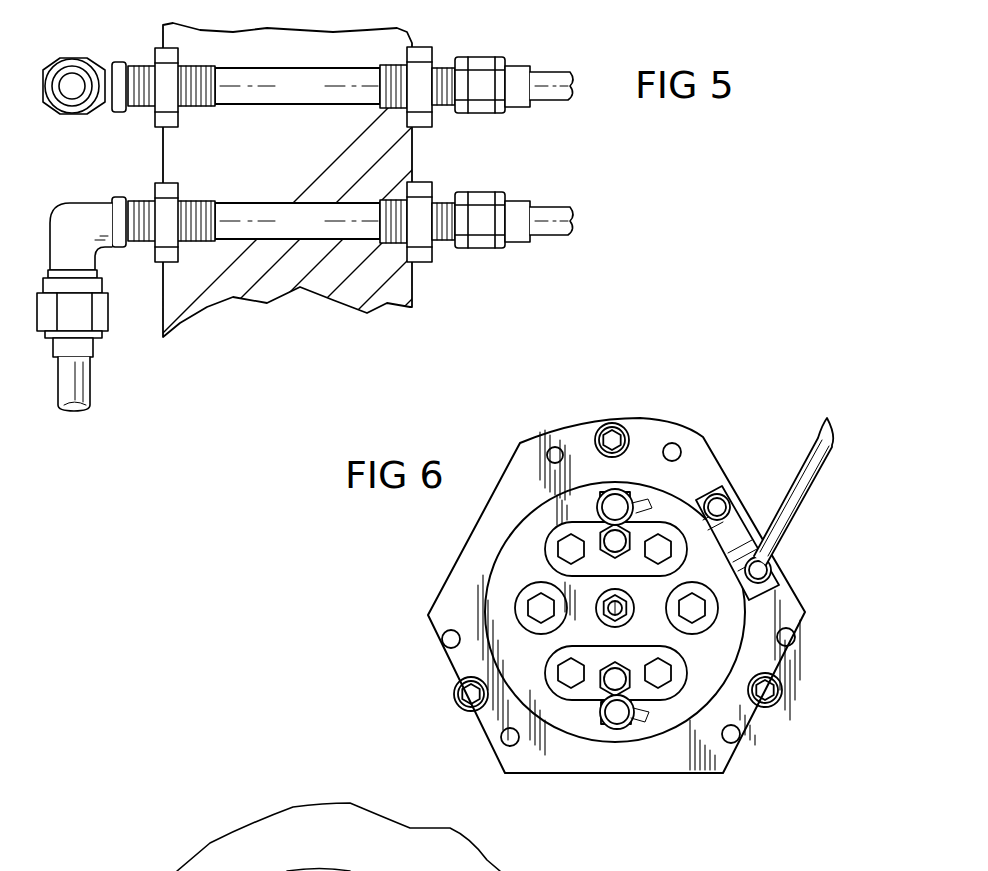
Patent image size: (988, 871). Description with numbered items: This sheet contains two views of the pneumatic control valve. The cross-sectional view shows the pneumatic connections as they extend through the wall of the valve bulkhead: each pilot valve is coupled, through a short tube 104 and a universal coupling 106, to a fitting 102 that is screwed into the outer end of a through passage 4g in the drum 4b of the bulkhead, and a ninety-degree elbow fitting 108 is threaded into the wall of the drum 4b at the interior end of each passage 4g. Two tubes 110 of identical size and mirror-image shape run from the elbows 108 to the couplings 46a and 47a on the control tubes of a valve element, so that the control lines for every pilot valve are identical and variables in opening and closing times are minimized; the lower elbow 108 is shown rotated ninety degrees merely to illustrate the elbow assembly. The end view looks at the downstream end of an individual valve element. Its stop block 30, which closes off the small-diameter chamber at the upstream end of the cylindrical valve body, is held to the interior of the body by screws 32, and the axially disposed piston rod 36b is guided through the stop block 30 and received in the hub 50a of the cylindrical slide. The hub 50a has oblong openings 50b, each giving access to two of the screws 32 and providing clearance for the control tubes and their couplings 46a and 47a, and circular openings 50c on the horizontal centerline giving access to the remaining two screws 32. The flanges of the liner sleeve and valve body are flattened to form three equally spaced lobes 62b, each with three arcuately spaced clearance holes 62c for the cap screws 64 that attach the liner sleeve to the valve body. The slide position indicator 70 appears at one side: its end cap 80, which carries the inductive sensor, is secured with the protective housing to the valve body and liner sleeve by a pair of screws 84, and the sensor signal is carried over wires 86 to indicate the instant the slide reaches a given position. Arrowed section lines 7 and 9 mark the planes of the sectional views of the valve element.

In FIG. 5, the drum 4b is at (395, 149).
In FIG. 5, the through passage 4g is at (312, 100).
In FIG. 5, the fitting 102 is at (433, 53).
In FIG. 5, the short tube 104 is at (558, 101).
In FIG. 5, the universal coupling 106 is at (510, 61).
In FIG. 5, the 90° elbow fitting 108 is at (117, 62).
In FIG. 5, the tube 110 is at (72, 113).
In FIG. 6, the section line 7- 7 is at (613, 415).
In FIG. 6, the section line 9- 9 is at (772, 517).
In FIG. 6, the stop block 30 is at (712, 462).
In FIG. 6, the screws 32 is at (552, 535).
In FIG. 6, the piston rod 36b is at (603, 614).
In FIG. 6, the coupling 46a is at (606, 489).
In FIG. 6, the coupling 47a is at (620, 730).
In FIG. 6, the hub 50a is at (503, 630).
In FIG. 6, the oblong openings 50b is at (568, 536).
In FIG. 6, the circular openings 50c is at (562, 550).
In FIG. 6, the lobe 62b is at (668, 420).
In FIG. 6, the holes 62c is at (553, 447).
In FIG. 6, the cap screws 64 is at (615, 433).
In FIG. 6, the slide position indicator 70 is at (795, 538).
In FIG. 6, the end cap 80 is at (738, 540).
In FIG. 6, the screws 84 is at (721, 494).
In FIG. 6, the wires 86 is at (797, 479).